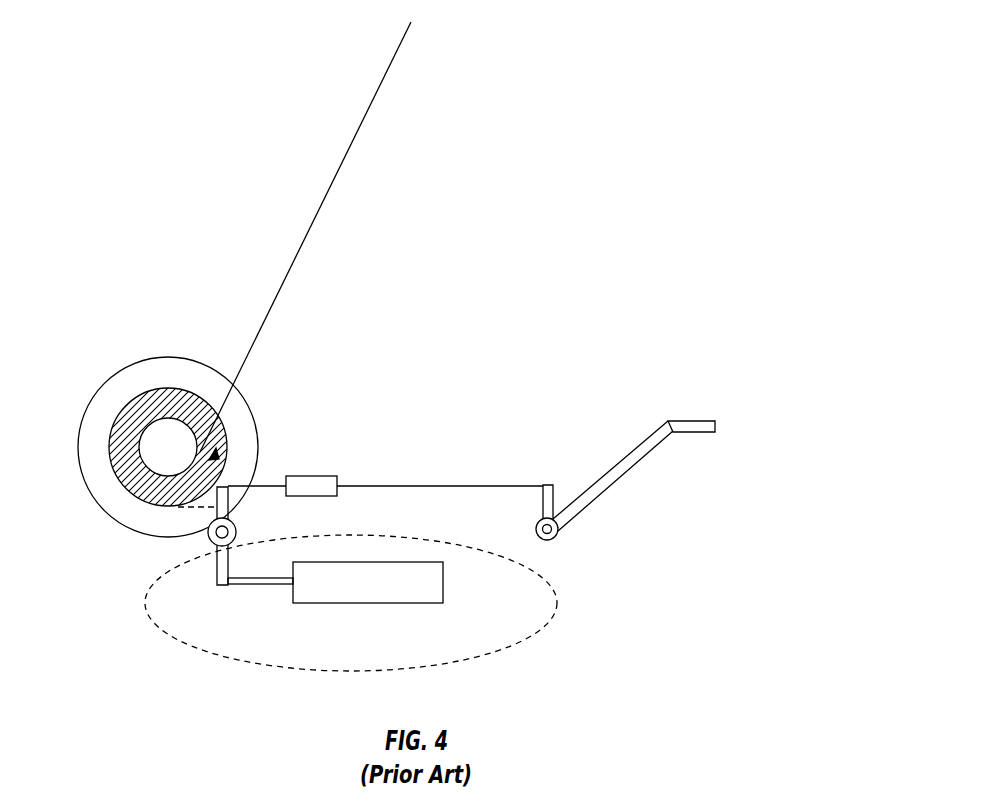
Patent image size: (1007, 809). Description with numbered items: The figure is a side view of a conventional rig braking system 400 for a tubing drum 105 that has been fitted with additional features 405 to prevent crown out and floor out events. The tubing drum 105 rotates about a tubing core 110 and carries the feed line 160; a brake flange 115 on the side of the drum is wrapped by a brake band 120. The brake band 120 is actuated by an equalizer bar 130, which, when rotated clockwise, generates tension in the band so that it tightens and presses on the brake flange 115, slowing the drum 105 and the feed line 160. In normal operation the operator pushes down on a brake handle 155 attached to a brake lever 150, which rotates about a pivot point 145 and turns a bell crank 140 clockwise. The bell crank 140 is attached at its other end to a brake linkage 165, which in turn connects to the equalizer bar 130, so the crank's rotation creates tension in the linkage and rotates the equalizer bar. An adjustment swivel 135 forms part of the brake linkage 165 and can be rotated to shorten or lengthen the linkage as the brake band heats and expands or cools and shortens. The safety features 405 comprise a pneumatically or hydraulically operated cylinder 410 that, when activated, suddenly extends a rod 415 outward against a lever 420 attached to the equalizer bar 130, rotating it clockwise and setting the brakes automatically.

The conventional rig braking system 400 is at (603, 103).
The tubing drum 105 is at (147, 359).
The tubing core 110 is at (140, 437).
The brake flange 115 is at (115, 472).
The brake band 120 is at (177, 507).
The equalizer bar 130 is at (228, 502).
The adjustment swivel 135 is at (319, 476).
The bell crank 140 is at (546, 485).
The pivot point 145 is at (556, 540).
The brake lever 150 is at (639, 446).
The brake handle 155 is at (717, 426).
The feed line 160 is at (345, 146).
The brake linkage 165 is at (392, 486).
The additional features 405 is at (511, 652).
The cylinder 410 is at (365, 603).
The rod 415 is at (273, 585).
The lever 420 is at (218, 586).